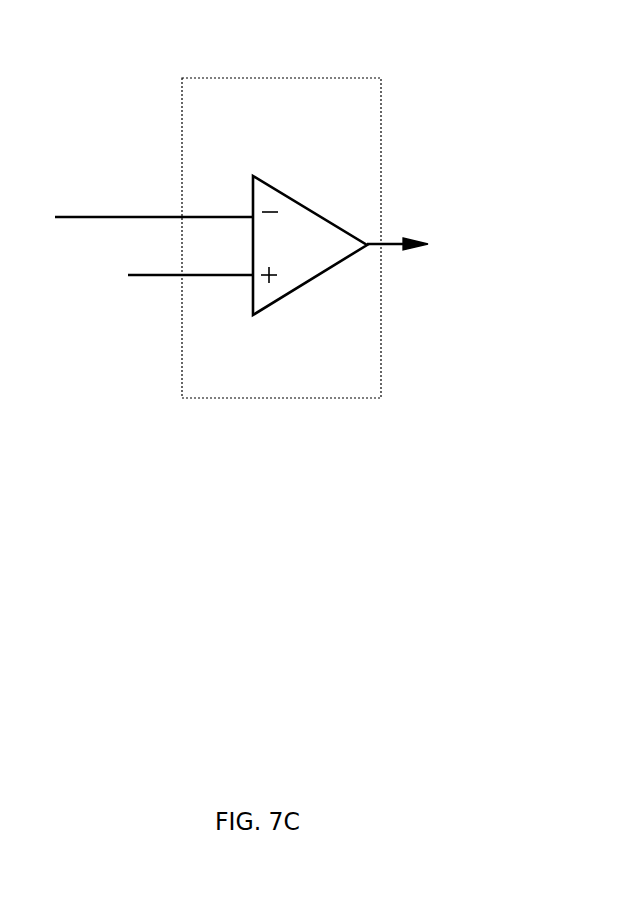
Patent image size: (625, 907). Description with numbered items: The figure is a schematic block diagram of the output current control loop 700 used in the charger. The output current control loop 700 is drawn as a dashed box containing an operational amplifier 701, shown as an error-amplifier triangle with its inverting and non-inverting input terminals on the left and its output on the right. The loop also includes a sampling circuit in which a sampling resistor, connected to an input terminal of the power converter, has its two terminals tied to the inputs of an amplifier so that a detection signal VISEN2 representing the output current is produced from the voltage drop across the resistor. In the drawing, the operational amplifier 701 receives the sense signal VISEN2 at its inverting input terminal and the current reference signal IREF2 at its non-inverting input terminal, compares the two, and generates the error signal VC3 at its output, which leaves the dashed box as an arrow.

The output current control loop 700 is at (300, 78).
The operational amplifier 701 is at (264, 177).
The sense signal VISEN2 is at (154, 192).
The current reference signal IREF2 is at (160, 313).
The error signal VC3 is at (412, 222).